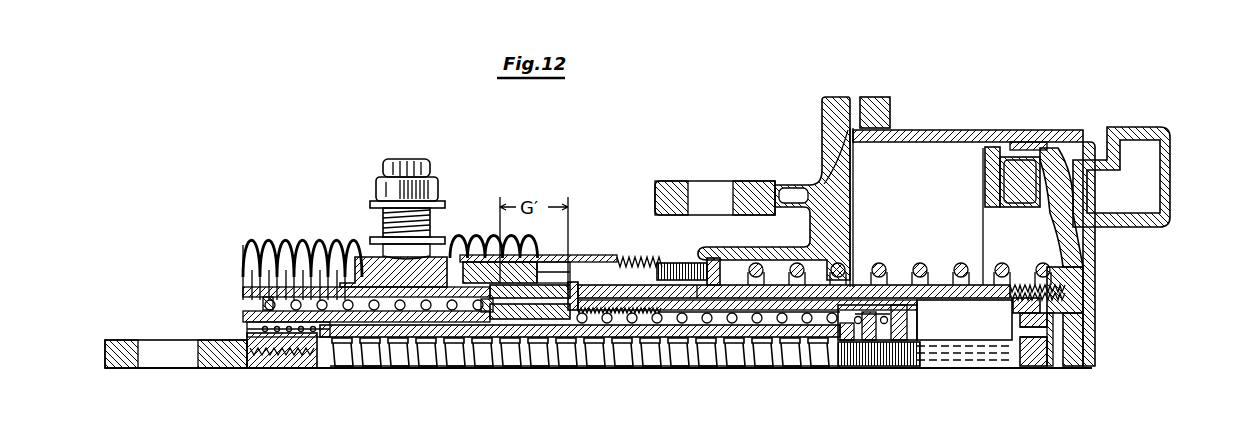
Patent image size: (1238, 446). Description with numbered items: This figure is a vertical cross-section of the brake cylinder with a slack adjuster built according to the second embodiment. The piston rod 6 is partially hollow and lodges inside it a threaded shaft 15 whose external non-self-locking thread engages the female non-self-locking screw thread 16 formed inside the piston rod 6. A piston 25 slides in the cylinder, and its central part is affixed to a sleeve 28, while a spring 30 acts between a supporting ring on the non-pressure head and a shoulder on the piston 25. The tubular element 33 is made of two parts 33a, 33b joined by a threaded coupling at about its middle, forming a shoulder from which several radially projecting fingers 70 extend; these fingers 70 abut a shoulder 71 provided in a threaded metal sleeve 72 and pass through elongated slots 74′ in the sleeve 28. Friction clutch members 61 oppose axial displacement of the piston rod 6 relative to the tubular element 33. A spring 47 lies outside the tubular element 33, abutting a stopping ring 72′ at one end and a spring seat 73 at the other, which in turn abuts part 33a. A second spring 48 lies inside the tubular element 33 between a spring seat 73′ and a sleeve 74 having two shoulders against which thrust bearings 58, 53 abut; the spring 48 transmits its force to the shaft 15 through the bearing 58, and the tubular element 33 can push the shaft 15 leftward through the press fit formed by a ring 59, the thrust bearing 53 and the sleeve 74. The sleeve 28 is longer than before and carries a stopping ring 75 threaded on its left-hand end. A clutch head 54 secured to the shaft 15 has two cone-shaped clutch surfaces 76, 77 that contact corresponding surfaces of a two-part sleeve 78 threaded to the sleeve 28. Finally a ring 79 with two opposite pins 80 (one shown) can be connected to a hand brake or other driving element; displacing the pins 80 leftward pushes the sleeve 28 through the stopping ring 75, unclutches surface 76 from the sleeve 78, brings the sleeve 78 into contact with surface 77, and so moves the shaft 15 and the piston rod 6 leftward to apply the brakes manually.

The piston rod 6 is at (311, 355).
The threaded shaft 15 is at (585, 352).
The female non-self-locking screw thread 16 is at (773, 354).
The piston 25 is at (1063, 240).
The sleeve 28 is at (416, 290).
The spring 30 is at (928, 258).
The tubular element 33 is at (671, 329).
The tubular element part 33a is at (547, 319).
The tubular element part 33b is at (802, 312).
The spring 47 is at (450, 311).
The spring 48 is at (733, 323).
The thrust bearing 53 is at (905, 340).
The clutch head 54 is at (1038, 350).
The thrust bearing 58 is at (852, 340).
The ring 59 is at (908, 318).
The friction clutch members 61 is at (272, 345).
The radially projecting fingers 70 is at (596, 297).
The shoulder 71 is at (542, 262).
The threaded metal sleeve 72 is at (556, 266).
The stopping ring 72′ is at (268, 326).
The spring seat 73 is at (488, 312).
The spring seat 73′ is at (630, 323).
The sleeve 74 is at (880, 348).
The elongated slots 74′ is at (650, 293).
The stopping ring 75 is at (363, 262).
The cone-shaped clutch surface 76 is at (1016, 318).
The cone-shaped clutch surface 77 is at (1056, 311).
The sleeve 78 is at (1060, 301).
The ring 79 is at (446, 258).
The pins 80 is at (383, 180).